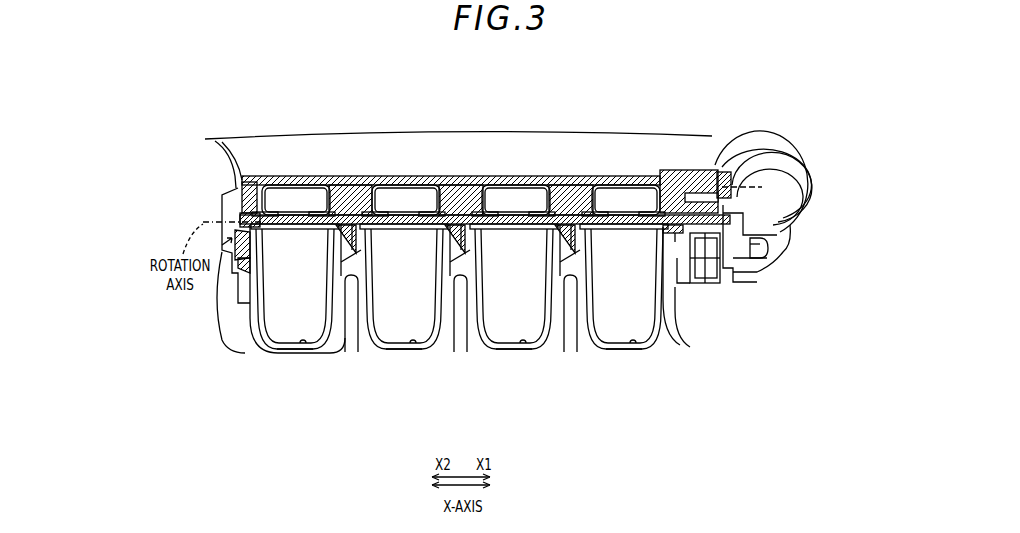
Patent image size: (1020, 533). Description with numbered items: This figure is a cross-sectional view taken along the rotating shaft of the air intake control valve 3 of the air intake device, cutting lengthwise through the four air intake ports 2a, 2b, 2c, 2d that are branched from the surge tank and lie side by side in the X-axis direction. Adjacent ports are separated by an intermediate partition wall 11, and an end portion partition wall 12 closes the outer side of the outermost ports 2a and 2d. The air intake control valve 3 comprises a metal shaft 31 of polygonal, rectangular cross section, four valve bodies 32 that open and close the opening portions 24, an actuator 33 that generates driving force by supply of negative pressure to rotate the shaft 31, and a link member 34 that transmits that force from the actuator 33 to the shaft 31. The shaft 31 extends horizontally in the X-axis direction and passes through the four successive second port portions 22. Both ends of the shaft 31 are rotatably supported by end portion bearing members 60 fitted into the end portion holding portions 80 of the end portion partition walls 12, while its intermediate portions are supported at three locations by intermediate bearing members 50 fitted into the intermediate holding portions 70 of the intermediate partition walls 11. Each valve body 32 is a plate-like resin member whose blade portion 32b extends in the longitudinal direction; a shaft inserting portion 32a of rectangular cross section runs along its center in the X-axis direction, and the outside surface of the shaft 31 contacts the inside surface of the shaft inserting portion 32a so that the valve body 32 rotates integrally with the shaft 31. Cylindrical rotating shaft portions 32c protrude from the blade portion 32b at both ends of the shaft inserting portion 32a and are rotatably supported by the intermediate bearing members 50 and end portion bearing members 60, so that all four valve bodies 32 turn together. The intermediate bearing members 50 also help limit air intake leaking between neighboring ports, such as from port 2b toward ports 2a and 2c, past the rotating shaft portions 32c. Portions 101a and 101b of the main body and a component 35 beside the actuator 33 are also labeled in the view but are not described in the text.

The air intake control valve 3 is at (795, 133).
The intermediate partition wall 11 is at (353, 300).
The end portion partition wall 12 is at (222, 335).
The second port portion 22 is at (303, 346).
The opening portion 24 is at (327, 214).
The shaft 31 is at (760, 208).
The valve body 32 is at (288, 190).
The blade portion 32b is at (410, 190).
The shaft inserting portion 32a is at (297, 242).
The rotating shaft portion 32c is at (269, 232).
The actuator 33 is at (258, 180).
The link member 34 is at (735, 262).
The motor flange 35 is at (778, 145).
The intermediate bearing member 50 is at (347, 300).
The end portion bearing member 60 is at (228, 209).
The intermediate holding portion 70 is at (350, 190).
The end portion holding portion 80 is at (232, 302).
The lower housing 101a is at (249, 345).
The upper housing 101b is at (205, 137).
The air intake port 2a is at (622, 352).
The air intake port 2b is at (510, 352).
The air intake port 2c is at (400, 352).
The air intake port 2d is at (290, 352).